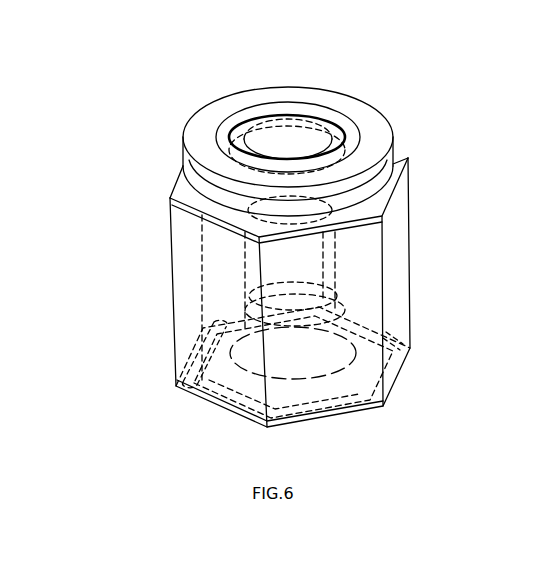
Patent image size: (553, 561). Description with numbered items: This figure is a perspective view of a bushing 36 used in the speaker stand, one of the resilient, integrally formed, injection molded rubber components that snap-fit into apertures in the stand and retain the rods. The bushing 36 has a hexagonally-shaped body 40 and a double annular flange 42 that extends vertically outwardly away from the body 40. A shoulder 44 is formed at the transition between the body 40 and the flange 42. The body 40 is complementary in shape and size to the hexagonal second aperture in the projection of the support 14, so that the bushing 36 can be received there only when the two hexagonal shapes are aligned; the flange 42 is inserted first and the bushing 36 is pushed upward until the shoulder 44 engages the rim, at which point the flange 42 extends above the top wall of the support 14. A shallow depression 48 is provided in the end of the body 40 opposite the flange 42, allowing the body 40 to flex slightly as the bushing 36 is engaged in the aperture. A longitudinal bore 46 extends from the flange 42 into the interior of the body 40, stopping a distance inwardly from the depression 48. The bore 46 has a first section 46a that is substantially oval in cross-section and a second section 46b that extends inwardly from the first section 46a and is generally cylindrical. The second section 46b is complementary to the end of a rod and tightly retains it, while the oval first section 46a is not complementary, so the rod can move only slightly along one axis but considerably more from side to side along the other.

The support 14 is at (552, 12).
The bushing 36 is at (468, 176).
The hexagonally-shaped body 40 is at (398, 258).
The double annular flange 42 is at (385, 125).
The shoulder 44 is at (178, 184).
The longitudinal bore 46 is at (311, 142).
The first section of bore 46a is at (260, 142).
The second section of bore 46b is at (403, 282).
The shallow depression 48 is at (367, 423).